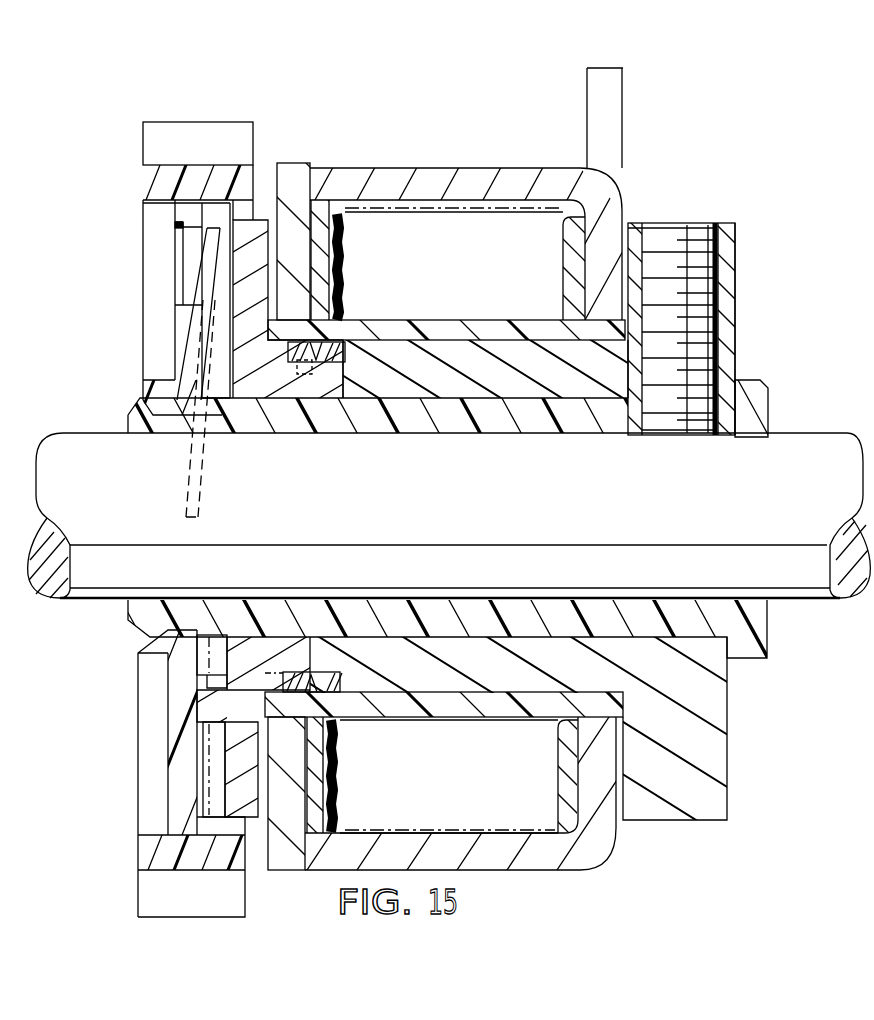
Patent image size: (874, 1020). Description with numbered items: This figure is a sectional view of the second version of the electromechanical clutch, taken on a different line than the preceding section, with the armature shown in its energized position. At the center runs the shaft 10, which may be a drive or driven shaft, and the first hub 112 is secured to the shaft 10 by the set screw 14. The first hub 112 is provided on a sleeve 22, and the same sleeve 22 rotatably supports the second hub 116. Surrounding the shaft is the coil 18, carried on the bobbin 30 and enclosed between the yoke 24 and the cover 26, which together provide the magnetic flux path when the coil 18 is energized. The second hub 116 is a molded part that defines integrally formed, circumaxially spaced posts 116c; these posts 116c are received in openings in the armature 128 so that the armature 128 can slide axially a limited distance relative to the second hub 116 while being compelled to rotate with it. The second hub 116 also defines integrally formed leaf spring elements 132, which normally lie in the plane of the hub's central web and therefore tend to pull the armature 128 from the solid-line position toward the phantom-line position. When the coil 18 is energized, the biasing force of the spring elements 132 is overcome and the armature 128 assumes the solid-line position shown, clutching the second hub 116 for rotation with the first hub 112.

The shaft 10 is at (785, 583).
The set screw 14 is at (695, 233).
The coil 18 is at (423, 207).
The sleeve 22 is at (755, 398).
The yoke 24 is at (508, 168).
The cover 26 is at (293, 163).
The bobbin 30 is at (485, 318).
The first hub 112 is at (728, 283).
The second hub 116 is at (138, 855).
The posts 116c is at (211, 737).
The armature 128 is at (270, 388).
The leaf spring elements 132 is at (205, 282).